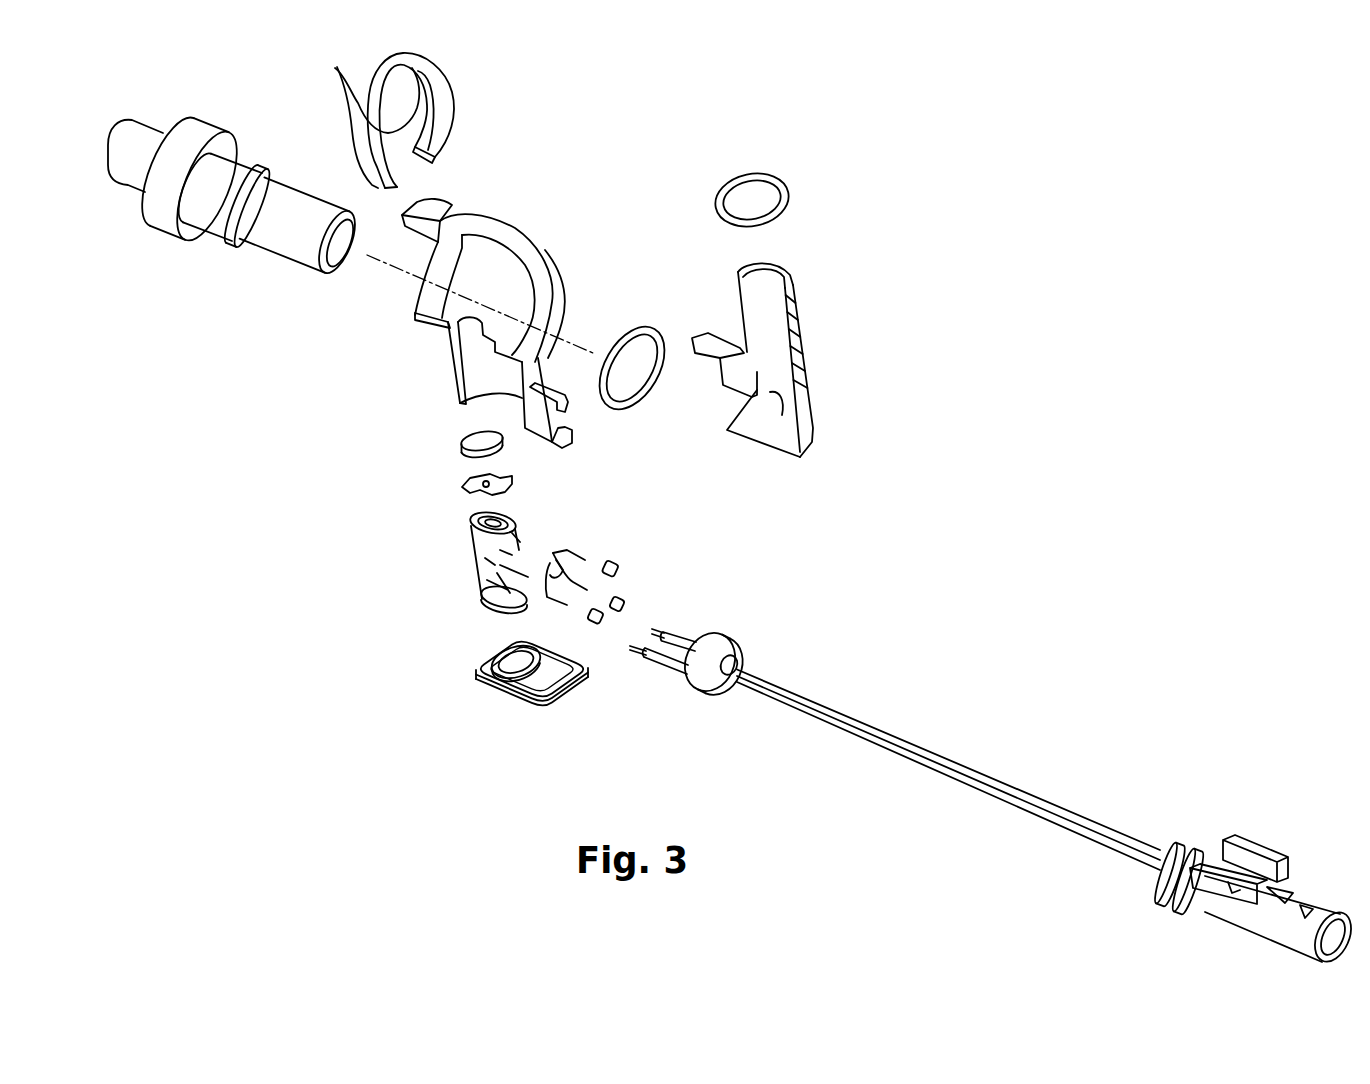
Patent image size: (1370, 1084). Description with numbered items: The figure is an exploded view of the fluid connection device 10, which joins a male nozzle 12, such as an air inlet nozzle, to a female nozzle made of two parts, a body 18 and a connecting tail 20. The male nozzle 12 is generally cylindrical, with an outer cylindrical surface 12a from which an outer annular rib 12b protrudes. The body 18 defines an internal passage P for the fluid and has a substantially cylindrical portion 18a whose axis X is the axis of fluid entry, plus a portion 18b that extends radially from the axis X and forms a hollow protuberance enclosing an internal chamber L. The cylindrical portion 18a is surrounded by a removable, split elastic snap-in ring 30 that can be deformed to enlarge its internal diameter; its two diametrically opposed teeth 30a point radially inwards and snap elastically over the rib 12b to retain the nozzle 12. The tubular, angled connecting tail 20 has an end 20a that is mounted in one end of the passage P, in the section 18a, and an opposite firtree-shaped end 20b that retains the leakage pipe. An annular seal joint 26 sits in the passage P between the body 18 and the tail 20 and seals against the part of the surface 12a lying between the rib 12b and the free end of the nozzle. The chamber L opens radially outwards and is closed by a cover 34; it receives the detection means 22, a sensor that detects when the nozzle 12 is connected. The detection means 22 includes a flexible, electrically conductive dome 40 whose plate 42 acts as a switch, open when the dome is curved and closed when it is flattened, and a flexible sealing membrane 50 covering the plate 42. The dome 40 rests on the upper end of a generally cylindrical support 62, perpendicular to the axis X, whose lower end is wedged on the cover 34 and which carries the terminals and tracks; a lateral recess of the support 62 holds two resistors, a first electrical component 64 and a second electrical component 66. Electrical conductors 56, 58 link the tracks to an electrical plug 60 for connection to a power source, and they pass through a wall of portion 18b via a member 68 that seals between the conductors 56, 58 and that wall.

The fluid connection device 10 is at (845, 143).
The male nozzle 12 is at (176, 102).
The outer cylindrical surface 12a is at (322, 160).
The outer annular rib 12b is at (276, 163).
The body 18 is at (480, 190).
The cylindrical portion of the body 18a is at (492, 245).
The radial portion of the body 18b is at (453, 382).
The connecting tail 20 is at (706, 323).
The end of the connecting tail 20a is at (705, 362).
The firtree end of the connecting tail 20b is at (801, 313).
The detection means 22 is at (302, 450).
The annular seal joint 26 is at (649, 328).
The elastic snap-in ring 30 is at (463, 66).
The teeth of the snap-in ring 30a is at (337, 68).
The cover 34 is at (460, 672).
The flexible electrically conductive dome 40 is at (348, 435).
The plate 42 is at (452, 492).
The flexible sealing membrane 50 is at (452, 453).
The electrical conductor 56 is at (783, 688).
The electrical conductor 58 is at (783, 688).
The electrical plug 60 is at (1334, 912).
The support 62 is at (460, 560).
The first electrical component 64 is at (577, 546).
The second electrical component 66 is at (577, 546).
The sealing member 68 is at (703, 628).
The internal passage P is at (412, 294).
The axis of rotation X is at (570, 337).
The internal chamber L is at (477, 406).